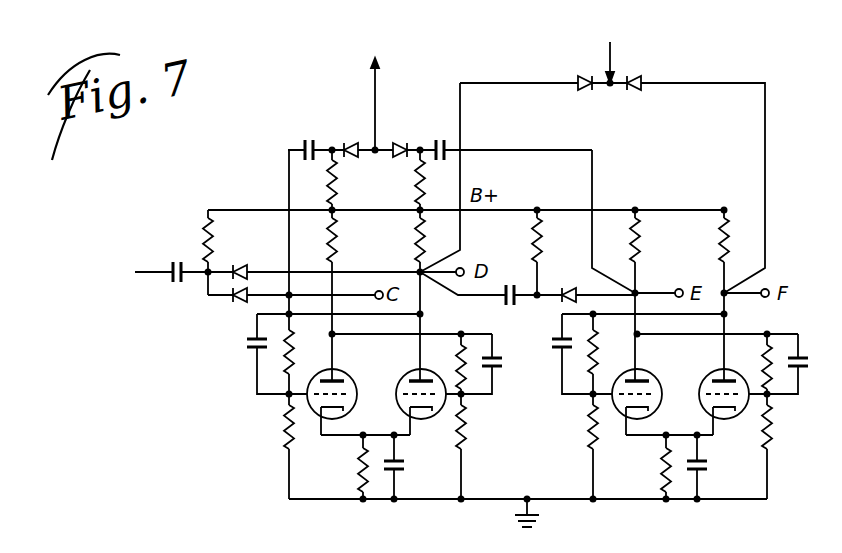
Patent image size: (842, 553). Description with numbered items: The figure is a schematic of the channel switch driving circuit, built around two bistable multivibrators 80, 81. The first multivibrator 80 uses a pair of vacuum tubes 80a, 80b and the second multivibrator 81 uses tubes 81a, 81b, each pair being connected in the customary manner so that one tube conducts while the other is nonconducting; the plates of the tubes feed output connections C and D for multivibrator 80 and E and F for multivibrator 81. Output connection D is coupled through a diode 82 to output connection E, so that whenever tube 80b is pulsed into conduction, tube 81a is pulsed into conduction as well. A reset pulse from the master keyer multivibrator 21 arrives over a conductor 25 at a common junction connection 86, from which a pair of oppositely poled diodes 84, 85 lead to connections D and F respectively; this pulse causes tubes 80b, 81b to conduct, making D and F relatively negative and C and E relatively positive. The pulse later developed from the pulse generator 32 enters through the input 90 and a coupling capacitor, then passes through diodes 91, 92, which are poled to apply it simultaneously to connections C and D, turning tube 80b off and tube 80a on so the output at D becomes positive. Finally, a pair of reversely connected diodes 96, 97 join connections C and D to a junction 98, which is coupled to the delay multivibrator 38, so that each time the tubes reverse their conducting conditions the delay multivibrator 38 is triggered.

The master keyer multivibrator 21 is at (654, 24).
The conductor 25 is at (612, 70).
The pulse generator 32 is at (108, 273).
The delay multivibrator 38 is at (373, 35).
The bistable multivibrator 80 is at (376, 423).
The vacuum tube 80a is at (312, 416).
The vacuum tube 80b is at (434, 416).
The bistable multivibrator 81 is at (677, 423).
The vacuum tube 81a is at (617, 416).
The vacuum tube 81b is at (737, 416).
The diode 82 is at (565, 286).
The diode 84 is at (585, 92).
The diode 85 is at (638, 92).
The common junction connection 86 is at (610, 92).
The input 90 is at (172, 285).
The diode 91 is at (238, 301).
The diode 92 is at (241, 262).
The diode 96 is at (352, 140).
The diode 97 is at (399, 140).
The junction 98 is at (375, 153).